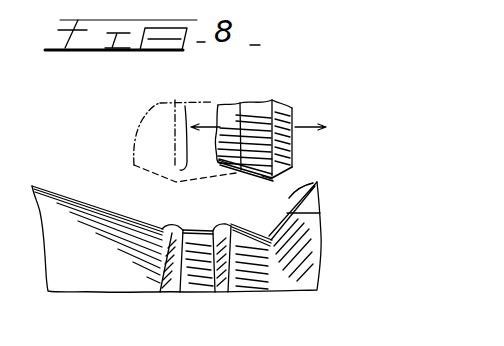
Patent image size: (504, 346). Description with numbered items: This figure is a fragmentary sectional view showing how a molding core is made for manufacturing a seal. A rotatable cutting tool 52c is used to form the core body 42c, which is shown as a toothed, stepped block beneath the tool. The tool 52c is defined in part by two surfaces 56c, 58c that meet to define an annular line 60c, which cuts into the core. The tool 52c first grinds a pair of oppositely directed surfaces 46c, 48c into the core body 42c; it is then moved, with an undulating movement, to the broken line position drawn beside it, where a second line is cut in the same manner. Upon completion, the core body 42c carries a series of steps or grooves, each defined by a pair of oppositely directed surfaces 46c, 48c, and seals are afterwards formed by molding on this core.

The core body 42c is at (304, 298).
The surface 46c is at (120, 217).
The surface 48c is at (148, 231).
The rotatable cutting tool 52c is at (309, 100).
The tool surface 56c is at (240, 179).
The tool surface 58c is at (298, 180).
The annular line 60c is at (273, 180).